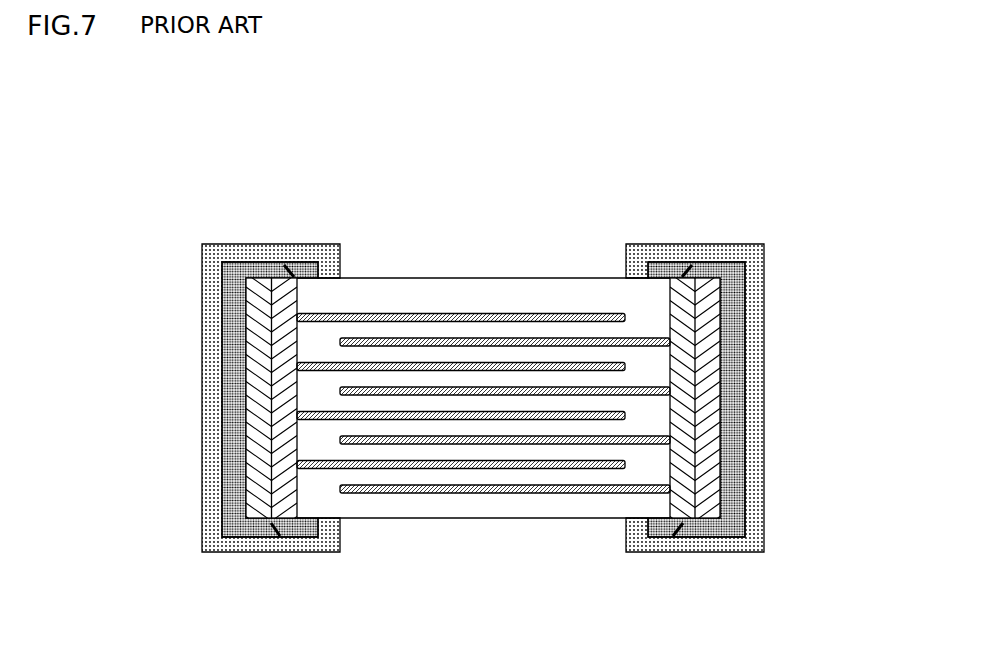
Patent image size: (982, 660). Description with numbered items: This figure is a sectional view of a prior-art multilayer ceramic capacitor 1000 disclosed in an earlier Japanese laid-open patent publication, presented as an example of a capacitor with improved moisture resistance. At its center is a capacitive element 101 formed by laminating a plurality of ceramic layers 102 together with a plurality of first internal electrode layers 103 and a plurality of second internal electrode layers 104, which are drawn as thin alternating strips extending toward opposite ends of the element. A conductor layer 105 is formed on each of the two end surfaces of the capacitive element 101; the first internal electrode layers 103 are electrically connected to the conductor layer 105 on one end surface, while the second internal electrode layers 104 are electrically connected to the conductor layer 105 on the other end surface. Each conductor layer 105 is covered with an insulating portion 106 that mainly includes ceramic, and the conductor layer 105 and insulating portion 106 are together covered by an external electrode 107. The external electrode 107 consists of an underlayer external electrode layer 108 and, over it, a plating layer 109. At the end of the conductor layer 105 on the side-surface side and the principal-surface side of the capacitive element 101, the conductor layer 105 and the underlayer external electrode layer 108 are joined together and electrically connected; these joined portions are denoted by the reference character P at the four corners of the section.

The multilayer ceramic capacitor 1000 is at (110, 106).
The capacitive element 101 is at (402, 300).
The ceramic layer 102 is at (478, 480).
The first internal electrode layer 103 is at (545, 338).
The second internal electrode layer 104 is at (481, 312).
The conductor layer 105 is at (260, 418).
The insulating portion 106 is at (253, 470).
The external electrode 107 is at (86, 322).
The underlayer external electrode layer 108 is at (237, 332).
The plating layer 109 is at (212, 367).
The joined portion P is at (292, 274).